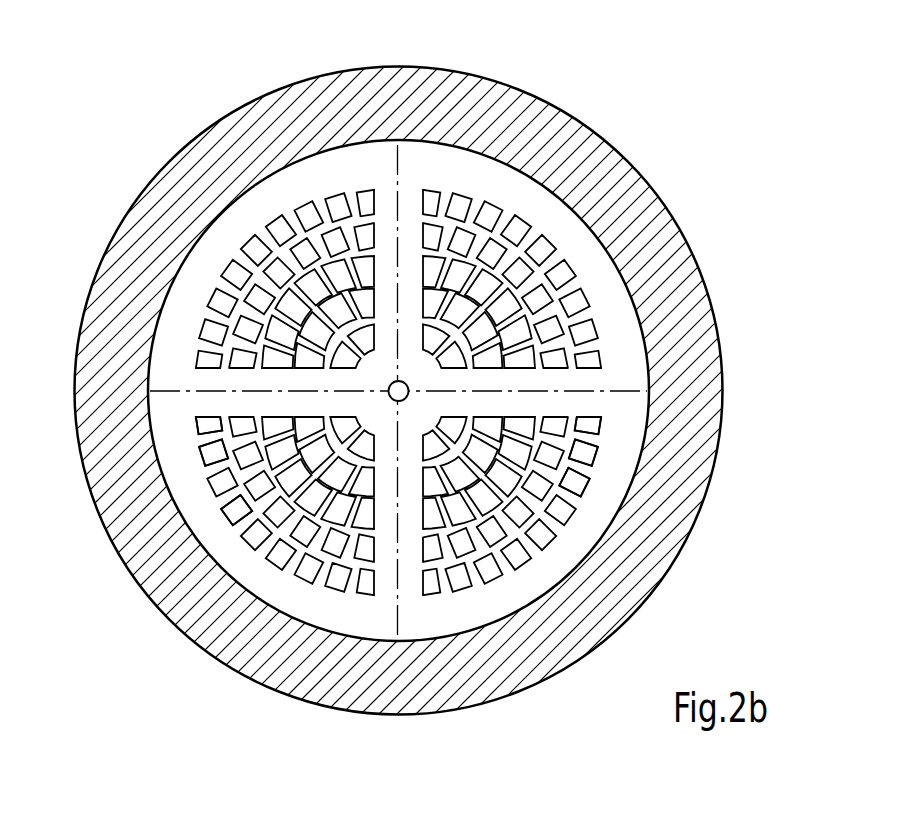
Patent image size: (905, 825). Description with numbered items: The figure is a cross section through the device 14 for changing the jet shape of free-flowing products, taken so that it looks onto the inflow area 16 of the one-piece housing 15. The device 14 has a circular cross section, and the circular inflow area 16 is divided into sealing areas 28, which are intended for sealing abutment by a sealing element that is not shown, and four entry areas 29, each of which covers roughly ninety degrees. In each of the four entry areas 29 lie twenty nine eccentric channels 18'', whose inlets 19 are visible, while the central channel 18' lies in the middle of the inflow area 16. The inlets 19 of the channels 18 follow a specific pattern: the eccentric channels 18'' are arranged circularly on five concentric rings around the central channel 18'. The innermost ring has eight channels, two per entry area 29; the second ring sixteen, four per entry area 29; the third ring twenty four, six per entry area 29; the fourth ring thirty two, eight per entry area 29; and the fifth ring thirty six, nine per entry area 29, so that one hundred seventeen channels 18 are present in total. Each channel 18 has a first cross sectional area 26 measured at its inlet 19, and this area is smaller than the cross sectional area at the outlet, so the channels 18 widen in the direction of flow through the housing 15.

The device 14 is at (145, 120).
The housing 15 is at (278, 117).
The inflow area 16 is at (182, 338).
The channels 18 is at (528, 392).
The central channel 18' is at (591, 368).
The eccentric channels 18'' is at (684, 430).
The inlet 19 is at (573, 483).
The first cross sectional area 26 is at (237, 510).
The sealing areas 28 is at (207, 402).
The entry areas 29 is at (213, 468).